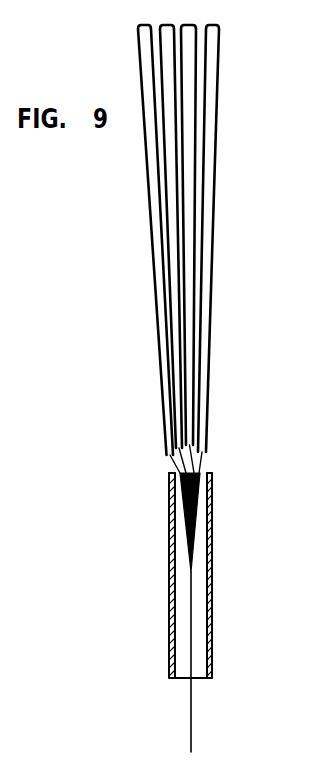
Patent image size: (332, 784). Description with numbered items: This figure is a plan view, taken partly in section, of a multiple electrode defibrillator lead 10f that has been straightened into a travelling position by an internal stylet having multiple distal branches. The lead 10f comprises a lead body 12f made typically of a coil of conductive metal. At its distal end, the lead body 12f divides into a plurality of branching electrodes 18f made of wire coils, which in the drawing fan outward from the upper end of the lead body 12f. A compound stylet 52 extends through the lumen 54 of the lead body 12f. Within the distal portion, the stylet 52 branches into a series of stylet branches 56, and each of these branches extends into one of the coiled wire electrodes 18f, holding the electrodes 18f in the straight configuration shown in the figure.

The branching electrodes 18f is at (213, 192).
The lead 10f is at (166, 612).
The lead body 12f is at (212, 625).
The stylet branches 56 is at (199, 488).
The lumen 54 is at (170, 636).
The compound stylet 52 is at (190, 708).